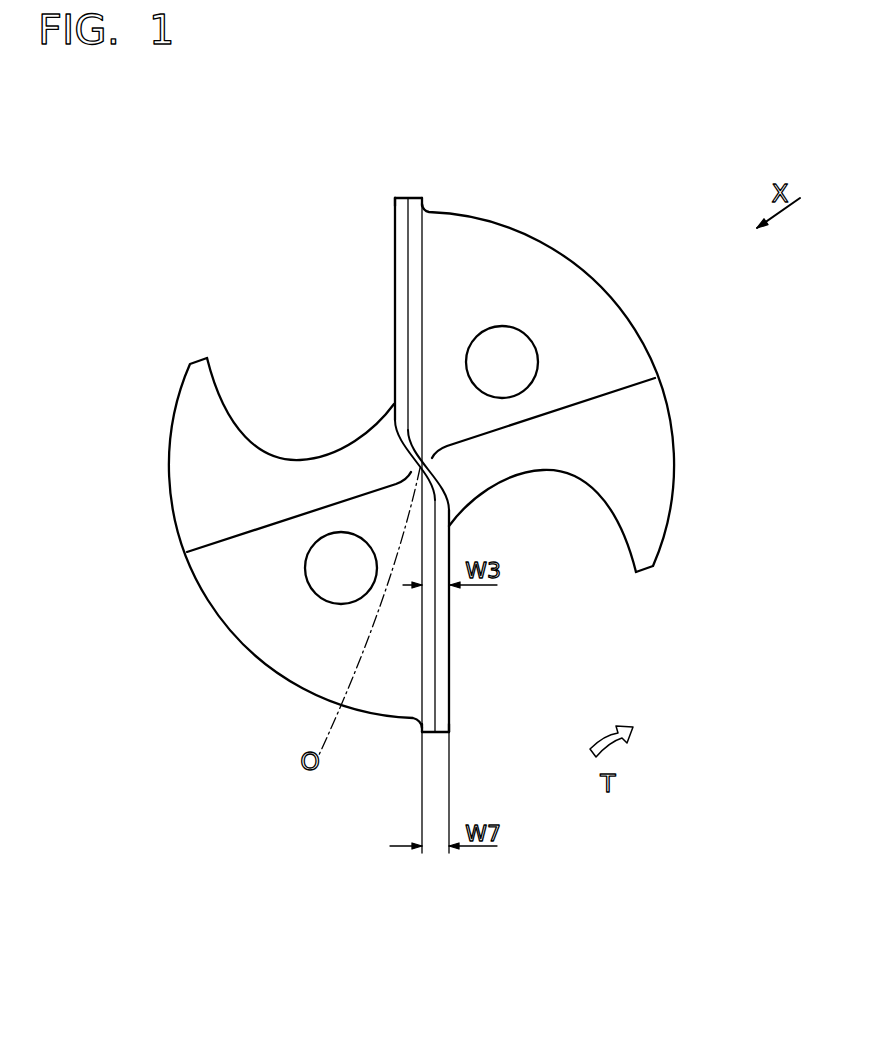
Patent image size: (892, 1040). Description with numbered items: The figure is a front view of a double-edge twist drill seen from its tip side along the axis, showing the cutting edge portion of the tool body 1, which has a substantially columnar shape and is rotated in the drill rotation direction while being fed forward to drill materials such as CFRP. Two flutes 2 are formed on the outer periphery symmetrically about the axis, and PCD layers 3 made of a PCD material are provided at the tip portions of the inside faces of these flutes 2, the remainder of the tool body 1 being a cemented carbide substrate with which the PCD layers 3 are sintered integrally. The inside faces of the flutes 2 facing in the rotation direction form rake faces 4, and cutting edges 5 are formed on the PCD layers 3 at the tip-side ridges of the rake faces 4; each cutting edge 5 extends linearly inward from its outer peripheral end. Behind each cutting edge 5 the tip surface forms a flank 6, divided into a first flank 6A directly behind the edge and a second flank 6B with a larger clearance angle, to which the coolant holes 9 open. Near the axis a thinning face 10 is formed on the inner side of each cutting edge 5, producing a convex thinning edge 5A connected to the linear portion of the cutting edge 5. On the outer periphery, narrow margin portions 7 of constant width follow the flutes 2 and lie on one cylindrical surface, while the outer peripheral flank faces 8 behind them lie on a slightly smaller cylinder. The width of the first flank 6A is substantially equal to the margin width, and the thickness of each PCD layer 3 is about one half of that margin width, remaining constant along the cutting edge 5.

The tool body 1 is at (425, 492).
The flute 2 is at (277, 282).
The PCD layer 3 is at (400, 302).
The rake face 4 is at (377, 357).
The cutting edge 5 is at (393, 247).
The thinning edge 5A is at (400, 450).
The flank 6 is at (432, 492).
The first flank 6A is at (417, 238).
The second flank 6B is at (507, 265).
The margin portion 7 is at (403, 195).
The outer peripheral flank face 8 is at (613, 297).
The coolant hole 9 is at (513, 357).
The thinning face 10 is at (203, 450).